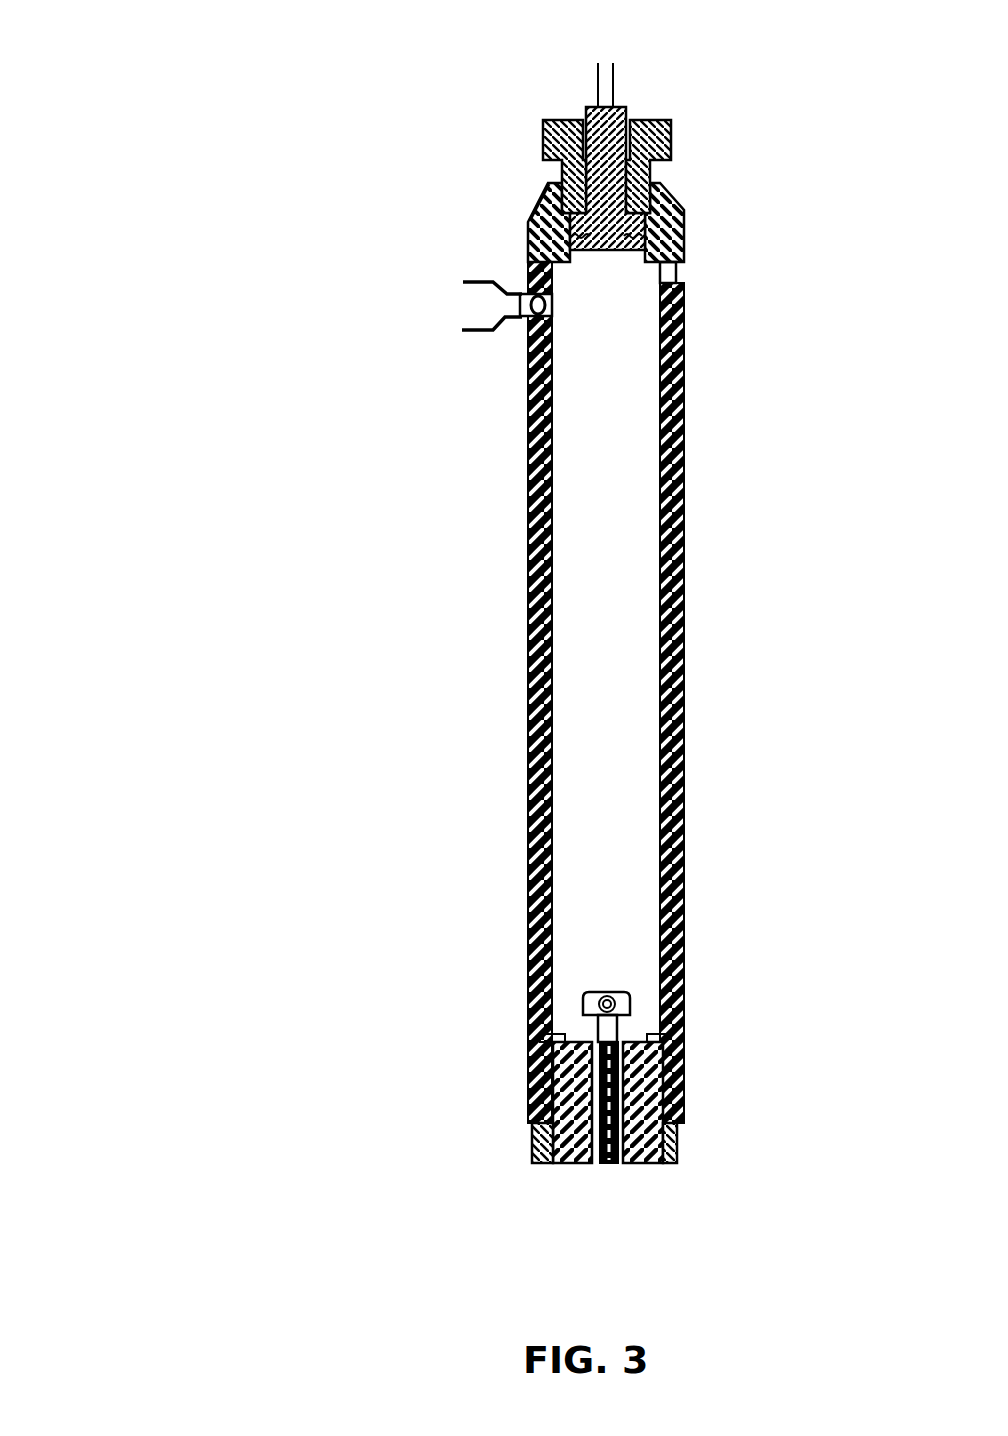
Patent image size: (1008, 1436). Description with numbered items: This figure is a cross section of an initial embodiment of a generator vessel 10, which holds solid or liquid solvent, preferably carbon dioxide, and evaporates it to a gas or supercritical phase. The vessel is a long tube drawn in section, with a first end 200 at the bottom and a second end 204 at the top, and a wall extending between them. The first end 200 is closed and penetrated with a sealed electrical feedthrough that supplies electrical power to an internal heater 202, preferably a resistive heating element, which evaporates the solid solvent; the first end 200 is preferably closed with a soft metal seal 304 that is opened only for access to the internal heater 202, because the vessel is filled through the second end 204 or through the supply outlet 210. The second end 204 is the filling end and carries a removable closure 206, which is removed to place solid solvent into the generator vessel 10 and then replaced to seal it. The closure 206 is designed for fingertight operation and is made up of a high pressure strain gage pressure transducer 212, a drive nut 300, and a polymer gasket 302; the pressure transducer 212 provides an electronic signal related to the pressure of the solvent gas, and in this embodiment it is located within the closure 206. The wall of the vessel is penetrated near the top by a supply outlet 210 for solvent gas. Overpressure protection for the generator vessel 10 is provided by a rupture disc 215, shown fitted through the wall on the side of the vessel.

The generator vessel 10 is at (470, 643).
The first end 200 is at (500, 1157).
The internal heater 202 is at (583, 1005).
The second end 204 is at (465, 238).
The removable closure 206 is at (506, 90).
The supply outlet 210 is at (718, 258).
The pressure transducer 212 is at (540, 203).
The rupture disc 215 is at (462, 330).
The drive nut 300 is at (700, 90).
The polymer gasket 302 is at (677, 198).
The soft metal seal 304 is at (647, 1041).